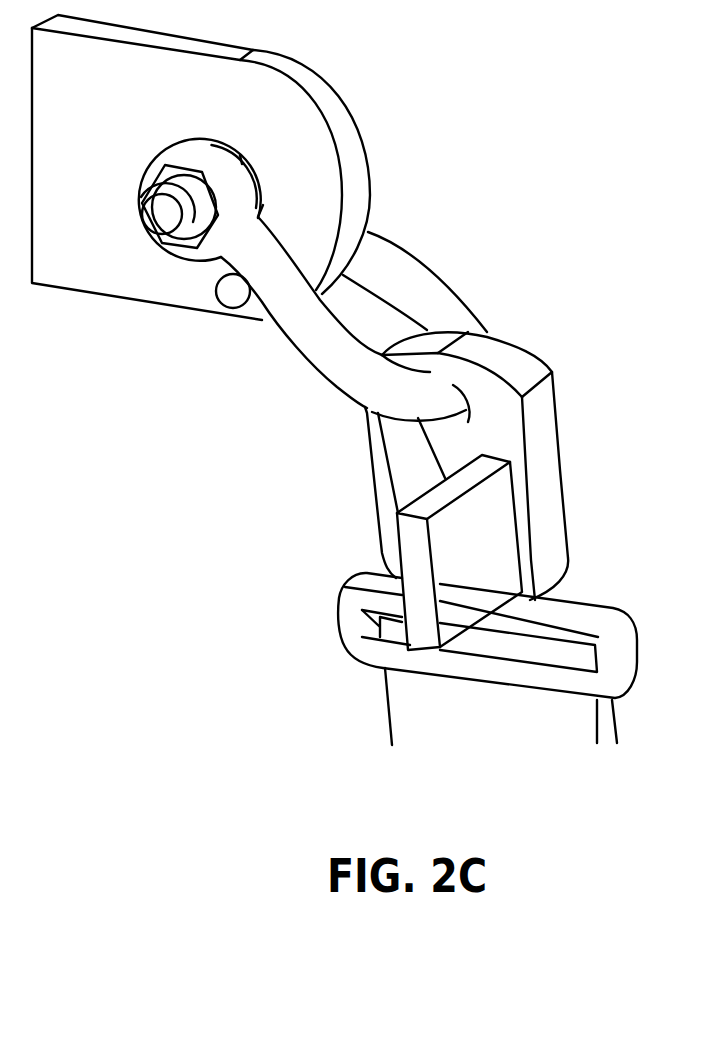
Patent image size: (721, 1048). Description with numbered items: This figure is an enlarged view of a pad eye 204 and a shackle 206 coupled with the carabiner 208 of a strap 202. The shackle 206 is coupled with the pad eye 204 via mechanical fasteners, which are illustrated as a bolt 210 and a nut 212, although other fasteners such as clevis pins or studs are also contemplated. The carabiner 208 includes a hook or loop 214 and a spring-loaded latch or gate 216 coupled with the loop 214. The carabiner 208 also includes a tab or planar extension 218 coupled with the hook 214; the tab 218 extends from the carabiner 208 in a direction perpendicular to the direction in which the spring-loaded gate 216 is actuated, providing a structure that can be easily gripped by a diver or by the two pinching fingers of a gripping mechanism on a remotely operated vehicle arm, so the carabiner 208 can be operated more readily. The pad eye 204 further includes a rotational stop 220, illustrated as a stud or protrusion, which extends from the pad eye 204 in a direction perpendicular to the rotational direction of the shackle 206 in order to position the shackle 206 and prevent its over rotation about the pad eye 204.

The strap 202 is at (400, 703).
The pad eye 204 is at (114, 93).
The shackle 206 is at (405, 283).
The carabiner 208 is at (508, 448).
The bolt 210 is at (160, 213).
The nut 212 is at (197, 250).
The hook or loop 214 is at (542, 455).
The spring-loaded gate 216 is at (385, 487).
The tab 218 is at (493, 563).
The rotational stop 220 is at (237, 298).